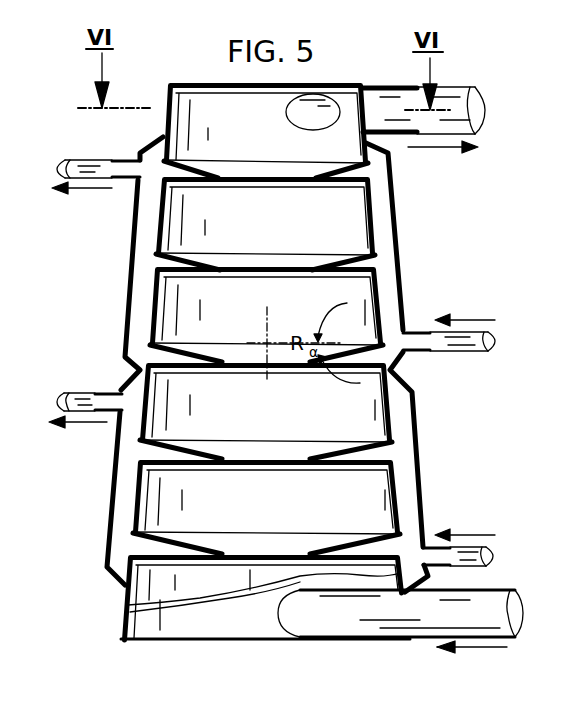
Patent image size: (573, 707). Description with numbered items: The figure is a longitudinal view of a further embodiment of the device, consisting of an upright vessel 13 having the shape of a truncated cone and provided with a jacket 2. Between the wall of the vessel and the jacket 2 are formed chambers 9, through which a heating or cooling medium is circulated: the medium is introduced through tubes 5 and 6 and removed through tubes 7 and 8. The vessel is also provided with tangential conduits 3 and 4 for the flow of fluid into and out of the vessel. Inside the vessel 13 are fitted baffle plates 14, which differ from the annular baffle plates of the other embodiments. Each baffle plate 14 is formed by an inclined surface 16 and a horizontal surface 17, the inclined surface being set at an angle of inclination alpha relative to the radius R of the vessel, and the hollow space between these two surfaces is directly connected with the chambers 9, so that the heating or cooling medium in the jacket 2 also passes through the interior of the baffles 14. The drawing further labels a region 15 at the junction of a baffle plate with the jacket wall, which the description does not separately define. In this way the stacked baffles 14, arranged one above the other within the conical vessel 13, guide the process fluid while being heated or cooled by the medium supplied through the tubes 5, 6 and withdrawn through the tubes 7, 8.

The jacket 2 is at (398, 224).
The tangential conduit 3 is at (428, 627).
The tangential conduit 4 is at (467, 100).
The tube 5 is at (487, 543).
The tube 6 is at (480, 338).
The tube 7 is at (70, 393).
The tube 8 is at (71, 160).
The chambers 9 is at (147, 214).
The upright vessel 13 is at (185, 82).
The baffle plates 14 is at (318, 178).
The inclined bottom plate 15 is at (150, 260).
The inclined surfaces 16 is at (340, 444).
The horizontal surfaces 17 is at (340, 468).